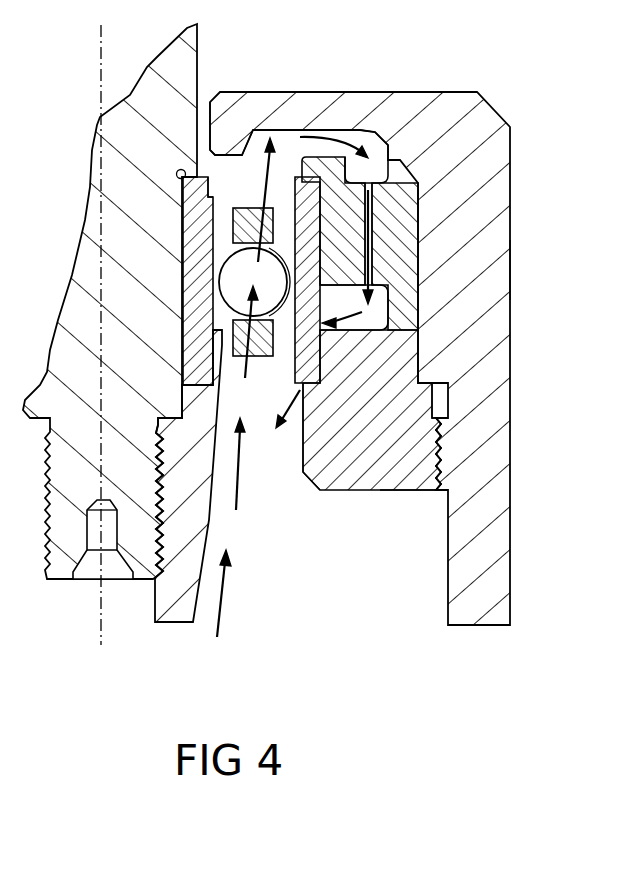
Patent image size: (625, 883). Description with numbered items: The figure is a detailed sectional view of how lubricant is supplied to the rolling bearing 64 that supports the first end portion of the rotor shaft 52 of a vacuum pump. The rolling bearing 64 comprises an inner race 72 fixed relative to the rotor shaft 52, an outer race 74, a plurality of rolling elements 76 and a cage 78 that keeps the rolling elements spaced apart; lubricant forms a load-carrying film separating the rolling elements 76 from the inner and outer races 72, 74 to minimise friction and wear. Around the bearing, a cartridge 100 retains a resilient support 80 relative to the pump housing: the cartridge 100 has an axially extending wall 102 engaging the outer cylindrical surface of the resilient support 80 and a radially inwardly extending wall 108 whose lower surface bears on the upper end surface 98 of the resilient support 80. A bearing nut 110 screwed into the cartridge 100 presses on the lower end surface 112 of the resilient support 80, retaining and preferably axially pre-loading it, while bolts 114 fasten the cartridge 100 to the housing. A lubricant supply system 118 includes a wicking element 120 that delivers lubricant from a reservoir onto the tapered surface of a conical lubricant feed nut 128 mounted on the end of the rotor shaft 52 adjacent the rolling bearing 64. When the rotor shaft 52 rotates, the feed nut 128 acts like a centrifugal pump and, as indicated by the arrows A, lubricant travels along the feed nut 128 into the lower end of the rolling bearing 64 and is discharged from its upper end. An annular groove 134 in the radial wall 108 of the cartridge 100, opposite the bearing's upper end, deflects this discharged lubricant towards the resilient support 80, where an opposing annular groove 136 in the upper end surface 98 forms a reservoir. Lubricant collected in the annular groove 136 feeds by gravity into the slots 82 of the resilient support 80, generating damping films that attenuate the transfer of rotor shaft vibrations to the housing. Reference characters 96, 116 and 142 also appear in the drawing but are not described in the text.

The rotor shaft 52 is at (174, 50).
The central axis 142 is at (101, 57).
The rolling bearing 64 is at (232, 165).
The radially inwardly extending wall 108 is at (266, 105).
The valve stem 96 is at (320, 165).
The annular groove 134 is at (350, 162).
The annular groove 136 is at (377, 172).
The upper end surface 98 is at (403, 150).
The resilient support 80 is at (422, 185).
The slots 82 is at (420, 222).
The axially extending wall 102 is at (503, 268).
The lower end surface 112 is at (408, 340).
The cartridge 100 is at (522, 449).
The bearing nut 110 is at (416, 484).
The retainer 116 is at (323, 388).
The lubricant supply system 118 is at (304, 474).
The wicking element 120 is at (303, 395).
The bolts 114 is at (305, 382).
The outer race 74 is at (297, 187).
The cage 78 is at (230, 230).
The rolling elements 76 is at (225, 285).
The inner race 72 is at (210, 337).
The conical lubricant feed nut 128 is at (182, 617).
The arrows A is at (228, 586).